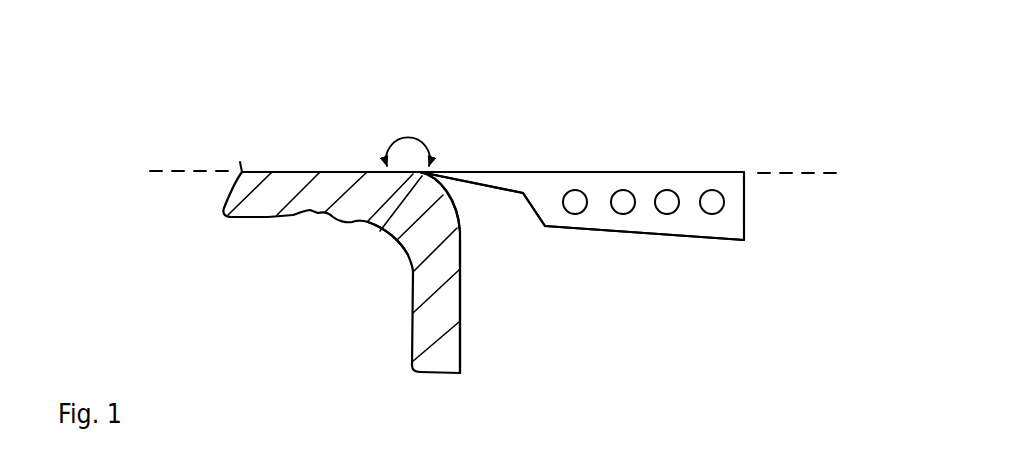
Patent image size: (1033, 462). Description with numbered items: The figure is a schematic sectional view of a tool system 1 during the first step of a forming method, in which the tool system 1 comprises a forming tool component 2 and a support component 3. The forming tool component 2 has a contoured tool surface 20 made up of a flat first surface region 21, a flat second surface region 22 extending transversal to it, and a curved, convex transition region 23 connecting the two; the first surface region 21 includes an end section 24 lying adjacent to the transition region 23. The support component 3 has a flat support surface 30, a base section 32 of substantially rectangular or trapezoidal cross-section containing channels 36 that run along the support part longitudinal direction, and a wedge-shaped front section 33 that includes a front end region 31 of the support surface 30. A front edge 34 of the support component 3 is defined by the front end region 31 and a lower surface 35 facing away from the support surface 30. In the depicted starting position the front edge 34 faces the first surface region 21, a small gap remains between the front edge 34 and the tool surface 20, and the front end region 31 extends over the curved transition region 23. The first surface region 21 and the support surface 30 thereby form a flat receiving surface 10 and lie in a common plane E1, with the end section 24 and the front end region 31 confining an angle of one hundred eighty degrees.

The tool system 1 is at (135, 77).
The forming tool component 2 is at (268, 209).
The support component 3 is at (746, 193).
The receiving surface 10 is at (555, 116).
The contoured tool surface 20 is at (257, 170).
The first surface region 21 is at (338, 170).
The second surface region 22 is at (462, 338).
The transition region 23 is at (448, 188).
The end section 24 is at (407, 169).
The support surface 30 is at (629, 170).
The front end region 31 is at (445, 169).
The base section 32 is at (667, 248).
The front section 33 is at (502, 212).
The front edge 34 is at (380, 232).
The lower surface 35 is at (477, 186).
The channels 36 is at (715, 207).
The common plane E1 is at (780, 171).